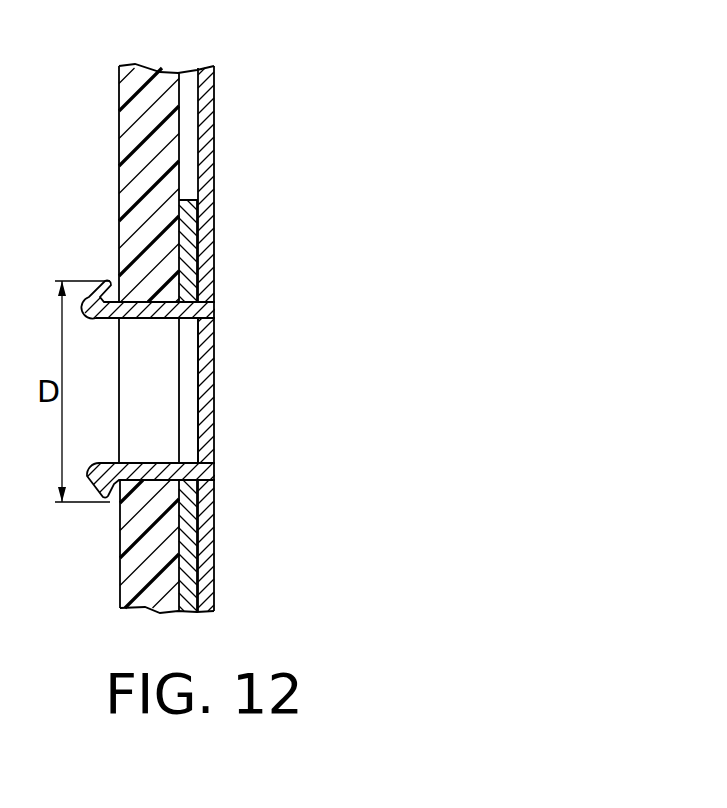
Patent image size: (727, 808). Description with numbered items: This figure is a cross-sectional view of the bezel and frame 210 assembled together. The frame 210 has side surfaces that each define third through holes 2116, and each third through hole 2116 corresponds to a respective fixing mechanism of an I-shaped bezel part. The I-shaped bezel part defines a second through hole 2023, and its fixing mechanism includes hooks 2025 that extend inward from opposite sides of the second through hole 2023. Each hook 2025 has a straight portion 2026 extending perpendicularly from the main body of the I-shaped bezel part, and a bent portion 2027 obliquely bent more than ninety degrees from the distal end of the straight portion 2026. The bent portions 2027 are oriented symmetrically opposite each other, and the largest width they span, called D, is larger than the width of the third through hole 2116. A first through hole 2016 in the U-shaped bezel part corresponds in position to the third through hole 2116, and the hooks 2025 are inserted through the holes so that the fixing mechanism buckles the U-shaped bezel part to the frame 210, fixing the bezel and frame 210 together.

The frame 210 is at (155, 535).
The first through hole 2016 is at (187, 399).
The second through hole 2023 is at (207, 423).
The hook 2025 is at (152, 300).
The straight portion 2026 is at (187, 473).
The bent portion 2027 is at (186, 232).
The third through hole 2116 is at (153, 370).